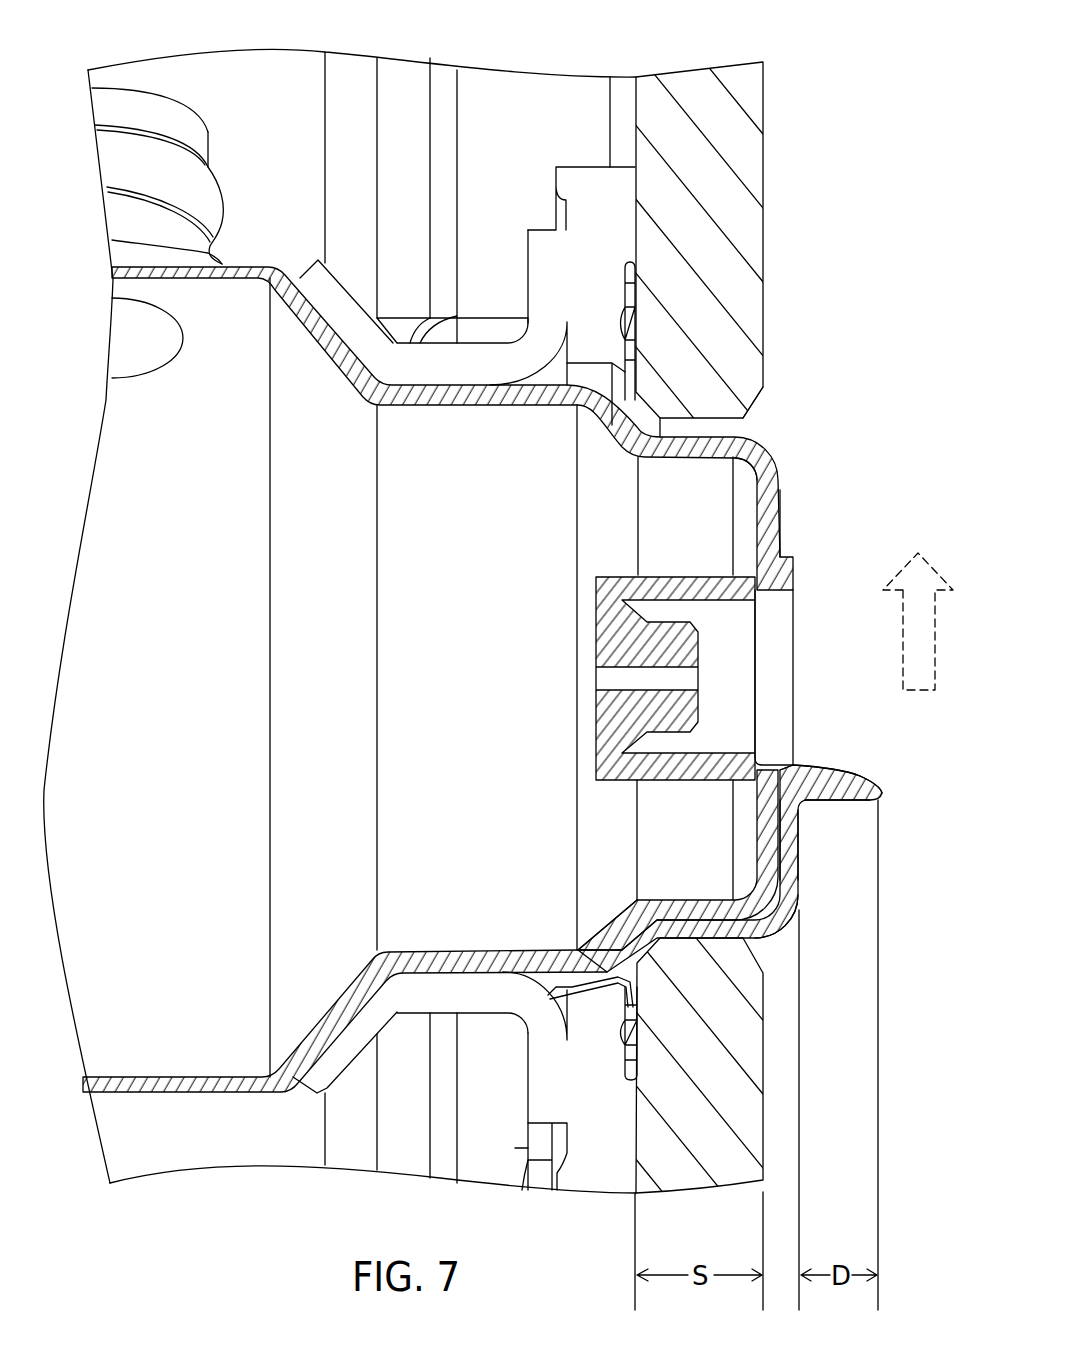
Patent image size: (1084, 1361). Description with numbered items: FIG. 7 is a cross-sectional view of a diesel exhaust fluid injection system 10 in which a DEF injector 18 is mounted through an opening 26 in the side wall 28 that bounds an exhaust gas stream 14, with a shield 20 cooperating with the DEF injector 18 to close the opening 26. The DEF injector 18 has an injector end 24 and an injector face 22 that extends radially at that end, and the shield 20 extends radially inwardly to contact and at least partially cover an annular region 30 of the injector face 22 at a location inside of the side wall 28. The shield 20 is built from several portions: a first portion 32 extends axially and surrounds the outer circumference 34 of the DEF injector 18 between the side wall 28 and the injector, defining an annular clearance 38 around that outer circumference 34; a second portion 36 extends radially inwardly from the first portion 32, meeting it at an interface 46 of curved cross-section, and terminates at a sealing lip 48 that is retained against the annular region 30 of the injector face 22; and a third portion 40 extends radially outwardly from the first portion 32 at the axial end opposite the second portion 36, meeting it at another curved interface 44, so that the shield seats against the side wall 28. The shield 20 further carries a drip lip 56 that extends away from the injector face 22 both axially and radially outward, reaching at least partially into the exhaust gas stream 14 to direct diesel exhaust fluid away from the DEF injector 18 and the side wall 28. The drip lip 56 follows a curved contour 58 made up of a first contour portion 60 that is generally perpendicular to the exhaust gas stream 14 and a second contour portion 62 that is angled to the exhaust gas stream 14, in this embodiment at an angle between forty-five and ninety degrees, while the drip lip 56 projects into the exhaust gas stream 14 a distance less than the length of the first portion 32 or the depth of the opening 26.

The system 10 is at (852, 123).
The exhaust gas stream 14 is at (903, 643).
The DEF injector 18 is at (130, 535).
The shield 20 is at (680, 920).
The injector face 22 is at (782, 503).
The injector end 24 is at (763, 462).
The opening 26 is at (670, 437).
The side wall 28 is at (717, 1107).
The annular region 30 is at (782, 528).
The first portion 32 is at (703, 903).
The outer circumference 34 is at (757, 397).
The second portion 36 is at (783, 842).
The annular clearance 38 is at (633, 903).
The third portion 40 is at (607, 973).
The interface 44 is at (625, 965).
The interface 46 is at (780, 910).
The sealing lip 48 is at (793, 817).
The drip lip 56 is at (853, 773).
The curved contour 58 is at (833, 762).
The first contour portion 60 is at (802, 762).
The second contour portion 62 is at (880, 800).